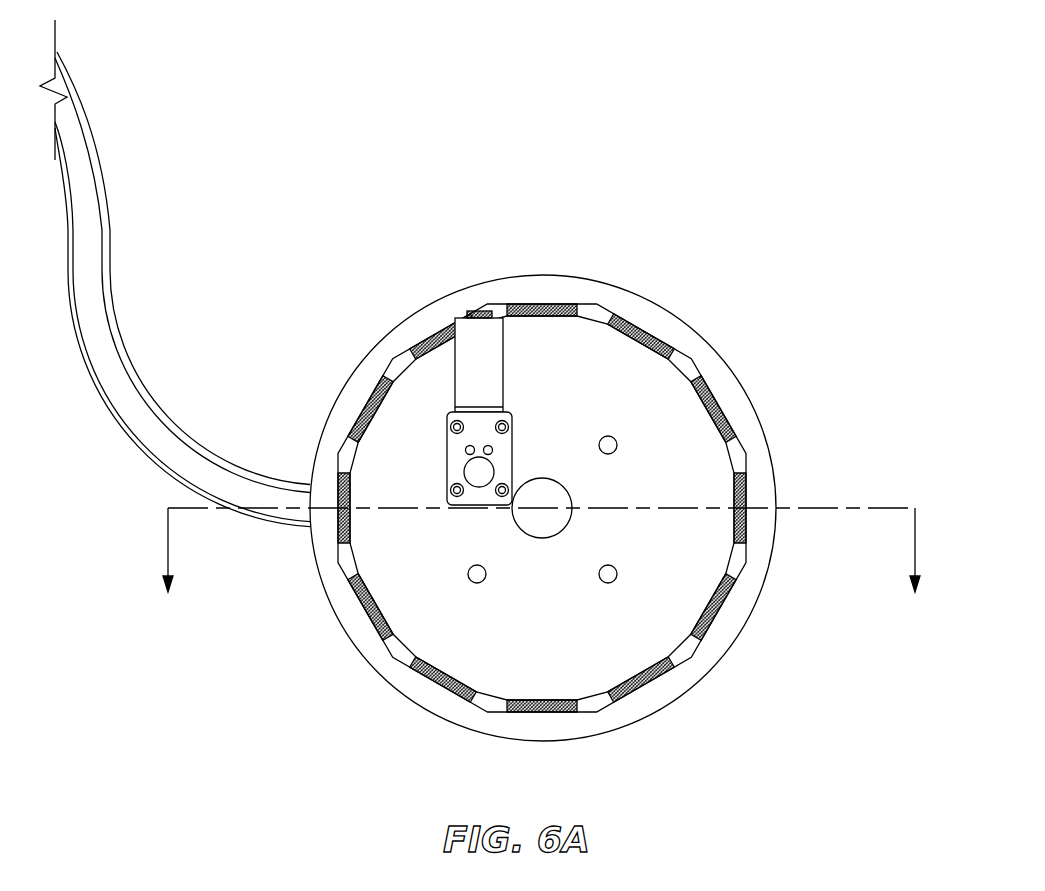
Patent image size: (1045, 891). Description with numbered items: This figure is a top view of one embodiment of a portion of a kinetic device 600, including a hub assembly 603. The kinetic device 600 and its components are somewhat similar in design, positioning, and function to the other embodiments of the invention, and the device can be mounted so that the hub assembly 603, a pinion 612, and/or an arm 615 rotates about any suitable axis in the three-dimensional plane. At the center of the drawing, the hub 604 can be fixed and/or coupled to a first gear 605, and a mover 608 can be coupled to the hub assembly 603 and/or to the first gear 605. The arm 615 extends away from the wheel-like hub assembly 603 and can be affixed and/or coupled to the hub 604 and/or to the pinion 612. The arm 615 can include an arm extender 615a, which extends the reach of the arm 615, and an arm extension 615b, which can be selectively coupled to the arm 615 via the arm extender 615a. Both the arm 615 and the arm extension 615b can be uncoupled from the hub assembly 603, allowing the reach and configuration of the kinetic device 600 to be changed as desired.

The kinetic device 600 is at (784, 174).
The hub assembly 603 is at (796, 412).
The hub 604 is at (610, 285).
The first gear 605 is at (700, 648).
The mover 608 is at (460, 318).
The pinion 612 is at (370, 616).
The arm 615 is at (153, 399).
The arm extender 615a is at (73, 247).
The arm extension 615b is at (103, 128).